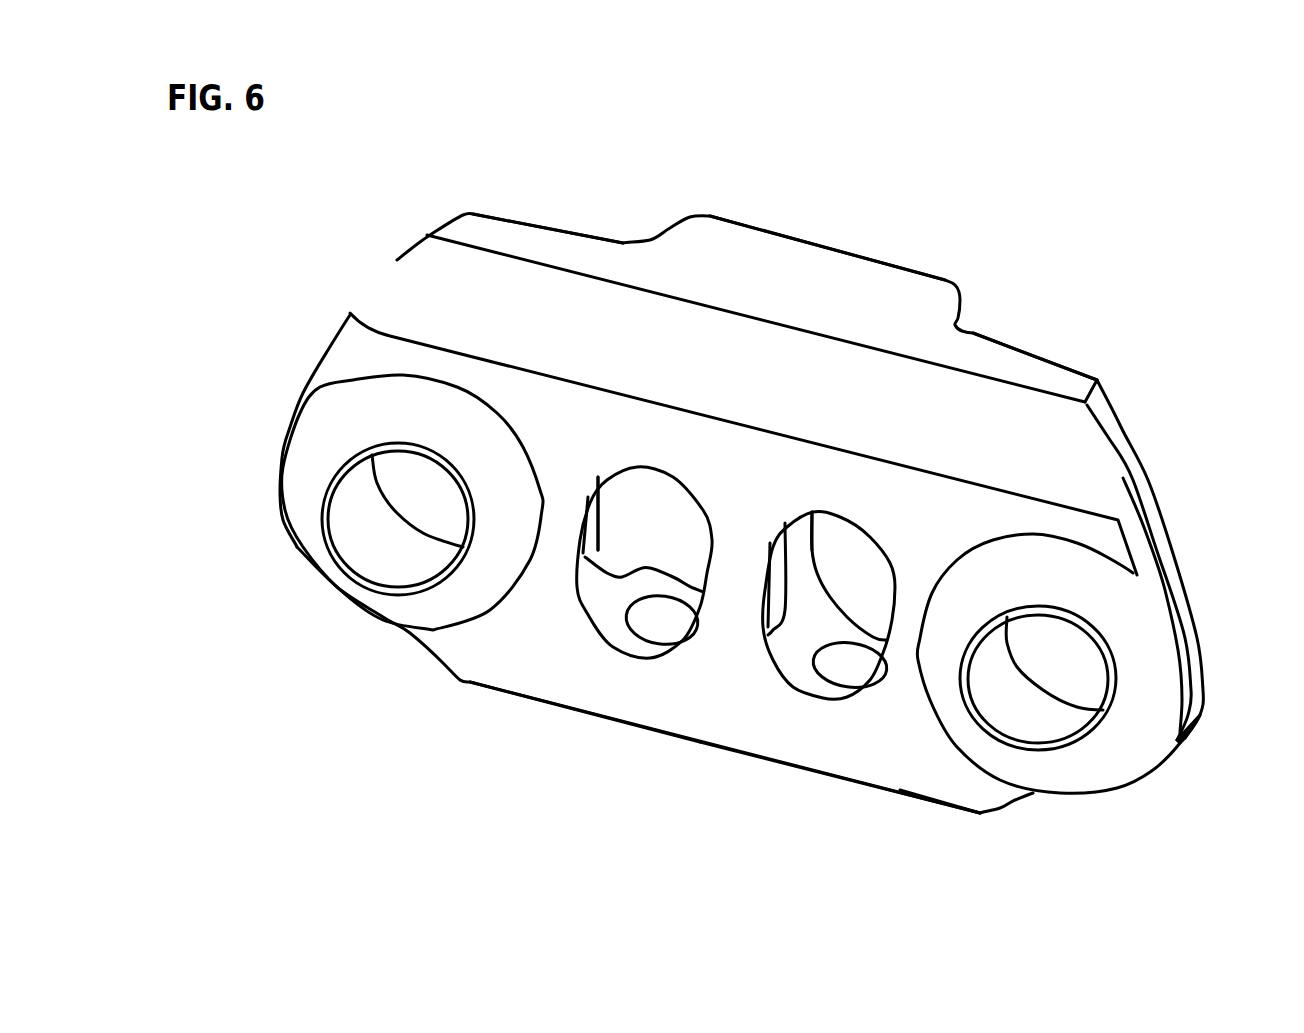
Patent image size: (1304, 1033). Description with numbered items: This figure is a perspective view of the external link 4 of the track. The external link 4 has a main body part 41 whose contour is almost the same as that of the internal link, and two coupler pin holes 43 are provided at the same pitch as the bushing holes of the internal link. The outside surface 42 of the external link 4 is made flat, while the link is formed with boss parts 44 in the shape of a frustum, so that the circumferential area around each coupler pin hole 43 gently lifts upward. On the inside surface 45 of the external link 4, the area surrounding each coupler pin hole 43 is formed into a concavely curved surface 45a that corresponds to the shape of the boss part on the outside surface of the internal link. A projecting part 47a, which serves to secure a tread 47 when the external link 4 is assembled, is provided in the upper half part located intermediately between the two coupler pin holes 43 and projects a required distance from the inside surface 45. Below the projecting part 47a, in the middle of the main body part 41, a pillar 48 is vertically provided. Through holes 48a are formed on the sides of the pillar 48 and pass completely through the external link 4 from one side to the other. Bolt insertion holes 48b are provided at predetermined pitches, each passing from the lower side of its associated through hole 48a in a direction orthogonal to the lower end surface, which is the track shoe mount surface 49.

The external link 4 is at (1060, 358).
The main body part 41 is at (533, 633).
The outside surface 42 is at (715, 719).
The coupler pin hole 43 is at (352, 540).
The boss part 44 is at (310, 478).
The inside surface 45 is at (575, 226).
The concavely curved surface 45a is at (1143, 612).
The tread 47 is at (988, 367).
The projecting part 47a is at (872, 280).
The pillar 48 is at (737, 597).
The through hole 48a is at (620, 538).
The bolt insertion hole 48b is at (640, 623).
The track shoe mount surface 49 is at (940, 803).